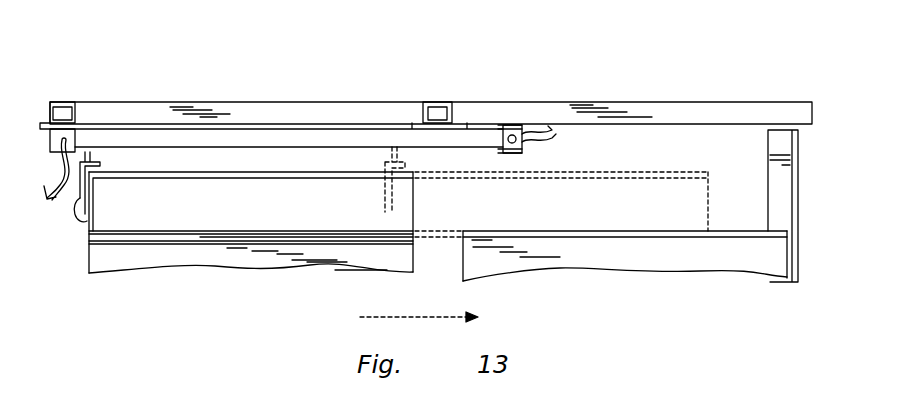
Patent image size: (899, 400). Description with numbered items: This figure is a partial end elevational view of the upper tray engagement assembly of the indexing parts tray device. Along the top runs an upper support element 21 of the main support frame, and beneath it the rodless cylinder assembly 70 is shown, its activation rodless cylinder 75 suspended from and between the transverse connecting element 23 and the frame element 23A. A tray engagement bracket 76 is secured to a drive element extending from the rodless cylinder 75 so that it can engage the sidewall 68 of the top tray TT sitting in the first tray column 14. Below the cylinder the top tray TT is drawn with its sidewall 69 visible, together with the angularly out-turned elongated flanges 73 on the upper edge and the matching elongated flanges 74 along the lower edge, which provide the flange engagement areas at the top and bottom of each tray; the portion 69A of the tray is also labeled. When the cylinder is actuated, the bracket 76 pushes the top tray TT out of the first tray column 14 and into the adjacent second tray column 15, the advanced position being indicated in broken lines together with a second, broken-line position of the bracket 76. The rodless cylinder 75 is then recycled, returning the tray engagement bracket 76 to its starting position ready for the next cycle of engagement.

The first tray column 14 is at (86, 276).
The second tray column 15 is at (660, 290).
The upper support element 21 is at (212, 102).
The transverse connecting element 23 is at (446, 102).
The frame element 23A is at (65, 101).
The sidewall 68 is at (90, 216).
The sidewall 69 is at (218, 175).
The panel edge portion 69A is at (305, 233).
The rodless cylinder assembly 70 is at (303, 114).
The angularly out-turned elongated flange 73 is at (90, 233).
The elongated flange 74 is at (90, 245).
The activation rodless cylinder 75 is at (358, 140).
The tray engagement bracket 76 is at (93, 218).
The top tray TT is at (220, 214).